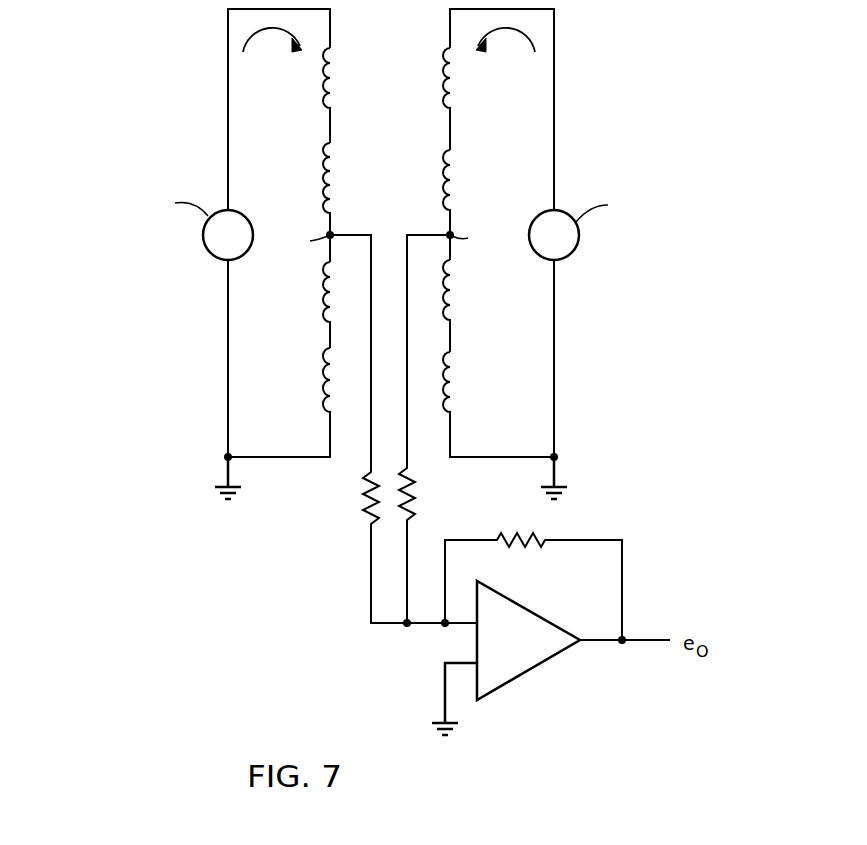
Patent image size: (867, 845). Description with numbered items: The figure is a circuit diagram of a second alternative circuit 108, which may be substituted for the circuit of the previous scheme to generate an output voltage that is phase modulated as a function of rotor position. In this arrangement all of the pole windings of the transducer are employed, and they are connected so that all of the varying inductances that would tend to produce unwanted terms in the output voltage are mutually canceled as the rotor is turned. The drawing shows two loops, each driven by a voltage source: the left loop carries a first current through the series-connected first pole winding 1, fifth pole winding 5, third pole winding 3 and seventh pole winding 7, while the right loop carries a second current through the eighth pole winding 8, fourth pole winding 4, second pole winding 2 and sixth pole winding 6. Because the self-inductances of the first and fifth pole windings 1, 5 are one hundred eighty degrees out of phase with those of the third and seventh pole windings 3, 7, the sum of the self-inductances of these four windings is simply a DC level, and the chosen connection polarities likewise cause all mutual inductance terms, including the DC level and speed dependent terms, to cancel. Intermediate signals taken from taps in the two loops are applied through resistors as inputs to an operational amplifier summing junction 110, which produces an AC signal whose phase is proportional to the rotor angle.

The second alternative circuit 108 is at (379, 254).
The operational amplifier summing junction 110 is at (529, 654).
The pole winding L1 1 is at (309, 95).
The pole winding L2 2 is at (461, 306).
The pole winding L3 3 is at (309, 305).
The pole winding L4 4 is at (461, 205).
The pole winding L5 5 is at (309, 202).
The pole winding L6 6 is at (461, 391).
The pole winding L7 7 is at (309, 389).
The pole winding L8 8 is at (461, 99).